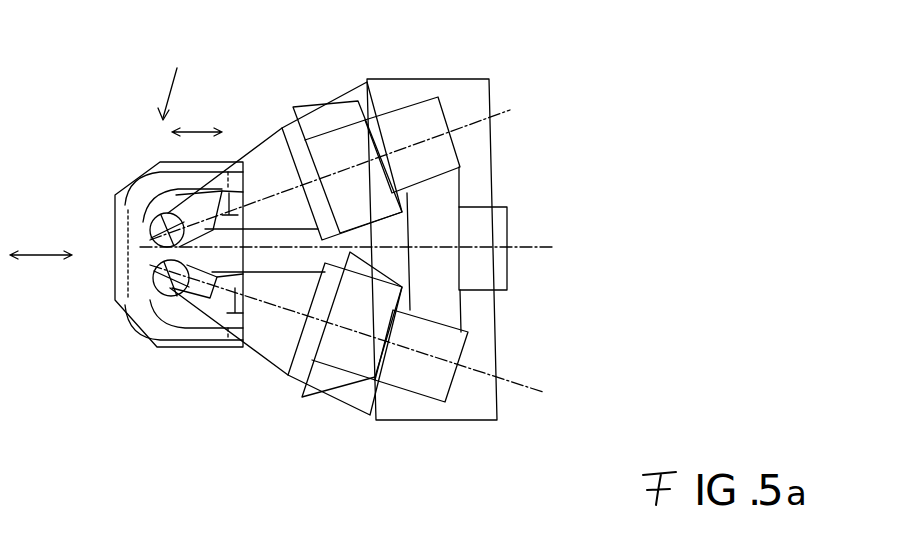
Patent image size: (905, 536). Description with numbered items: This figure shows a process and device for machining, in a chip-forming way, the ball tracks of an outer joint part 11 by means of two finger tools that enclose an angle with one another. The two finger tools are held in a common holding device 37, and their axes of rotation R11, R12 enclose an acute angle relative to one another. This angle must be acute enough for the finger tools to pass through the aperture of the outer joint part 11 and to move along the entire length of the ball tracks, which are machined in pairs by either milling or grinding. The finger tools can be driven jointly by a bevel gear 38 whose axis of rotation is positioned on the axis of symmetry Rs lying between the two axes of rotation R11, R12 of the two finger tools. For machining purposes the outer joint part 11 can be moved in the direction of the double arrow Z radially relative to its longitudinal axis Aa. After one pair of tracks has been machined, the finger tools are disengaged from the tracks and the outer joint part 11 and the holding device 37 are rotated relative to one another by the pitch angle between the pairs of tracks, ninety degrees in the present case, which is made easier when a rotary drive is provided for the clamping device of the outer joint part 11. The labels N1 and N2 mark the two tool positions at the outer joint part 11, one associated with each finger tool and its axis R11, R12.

The outer joint part 11 is at (186, 80).
The holding device 37 is at (405, 88).
The bevel gear 38 is at (445, 198).
The axis of rotation R11 is at (522, 107).
The axis of rotation R12 is at (533, 382).
The axis of symmetry Rs is at (542, 238).
The first fiber end N1 is at (245, 246).
The second fiber end N2 is at (239, 314).
The longitudinal axis Aa is at (134, 273).
The double arrow Z is at (116, 177).